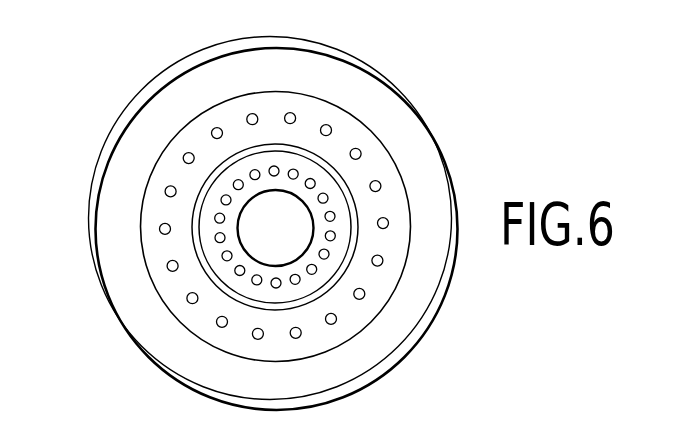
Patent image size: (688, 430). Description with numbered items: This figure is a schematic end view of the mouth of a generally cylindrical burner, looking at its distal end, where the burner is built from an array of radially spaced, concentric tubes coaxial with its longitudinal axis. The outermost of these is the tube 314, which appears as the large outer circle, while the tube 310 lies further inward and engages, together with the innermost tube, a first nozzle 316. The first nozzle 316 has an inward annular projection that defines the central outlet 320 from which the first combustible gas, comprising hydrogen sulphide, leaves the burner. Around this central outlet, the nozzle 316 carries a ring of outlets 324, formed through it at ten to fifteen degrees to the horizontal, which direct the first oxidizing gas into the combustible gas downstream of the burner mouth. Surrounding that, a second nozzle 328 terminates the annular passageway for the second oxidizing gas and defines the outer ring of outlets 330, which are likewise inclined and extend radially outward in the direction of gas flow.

The tube 310 is at (200, 187).
The tube 314 is at (141, 366).
The first nozzle 316 is at (214, 219).
The outlet 320 is at (292, 240).
The outlets 324 is at (215, 238).
The nozzle 328 is at (382, 172).
The outlets 330 is at (250, 114).